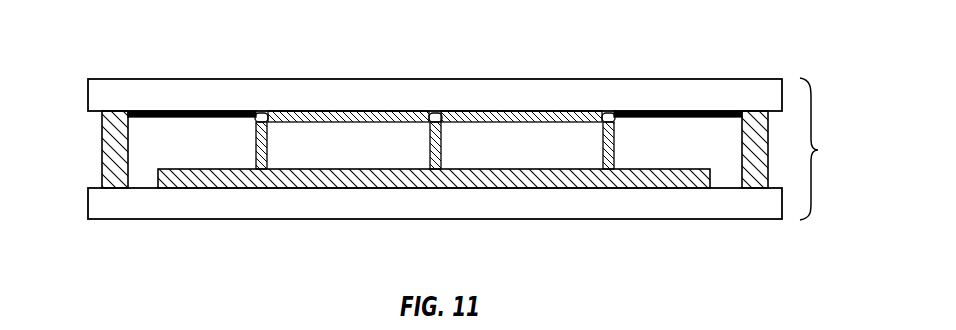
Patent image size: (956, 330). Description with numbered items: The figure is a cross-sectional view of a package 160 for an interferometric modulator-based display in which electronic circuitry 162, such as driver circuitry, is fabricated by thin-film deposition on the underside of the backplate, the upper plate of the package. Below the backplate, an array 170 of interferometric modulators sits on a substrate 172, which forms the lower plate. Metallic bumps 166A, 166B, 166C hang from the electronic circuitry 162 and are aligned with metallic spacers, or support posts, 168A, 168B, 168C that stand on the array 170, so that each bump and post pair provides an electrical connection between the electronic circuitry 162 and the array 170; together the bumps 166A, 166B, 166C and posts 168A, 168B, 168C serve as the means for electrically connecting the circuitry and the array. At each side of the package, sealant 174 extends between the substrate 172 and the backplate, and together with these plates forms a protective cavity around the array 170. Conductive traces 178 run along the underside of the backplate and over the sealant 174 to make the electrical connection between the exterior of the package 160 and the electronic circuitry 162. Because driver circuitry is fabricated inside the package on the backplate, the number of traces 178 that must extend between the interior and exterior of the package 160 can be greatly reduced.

The package 160 is at (830, 149).
The electronic circuitry 162 is at (545, 113).
The metallic bump 166A is at (262, 113).
The metallic bump 166B is at (433, 113).
The metallic bump 166C is at (607, 113).
The support post 168A is at (268, 152).
The support post 168B is at (441, 150).
The support post 168C is at (614, 148).
The array 170 is at (635, 178).
The substrate 172 is at (340, 205).
The sealant 174 is at (100, 142).
The conductive traces 178 is at (212, 117).